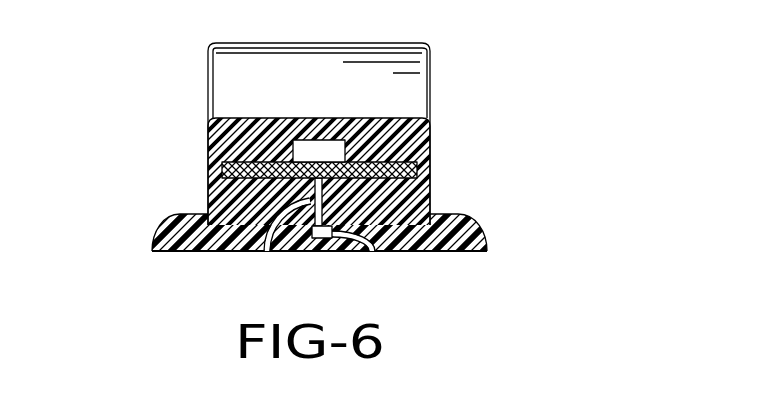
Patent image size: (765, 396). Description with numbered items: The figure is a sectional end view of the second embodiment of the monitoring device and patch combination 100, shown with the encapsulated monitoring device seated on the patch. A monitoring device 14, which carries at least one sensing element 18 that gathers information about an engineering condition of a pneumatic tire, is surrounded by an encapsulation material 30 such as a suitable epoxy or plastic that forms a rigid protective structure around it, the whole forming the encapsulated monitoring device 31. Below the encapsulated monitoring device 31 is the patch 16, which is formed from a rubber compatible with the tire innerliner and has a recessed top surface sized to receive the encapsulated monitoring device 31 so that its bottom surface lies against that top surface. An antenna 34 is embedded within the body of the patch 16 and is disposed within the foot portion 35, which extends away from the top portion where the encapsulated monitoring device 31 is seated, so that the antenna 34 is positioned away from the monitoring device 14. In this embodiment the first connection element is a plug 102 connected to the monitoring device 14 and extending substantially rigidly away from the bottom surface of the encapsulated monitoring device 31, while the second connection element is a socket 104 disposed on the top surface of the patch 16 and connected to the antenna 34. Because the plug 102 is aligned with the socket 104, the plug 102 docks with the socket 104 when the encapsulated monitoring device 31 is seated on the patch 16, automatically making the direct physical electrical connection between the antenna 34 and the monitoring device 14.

The combination 100 is at (341, 153).
The encapsulated monitoring device 31 is at (433, 108).
The encapsulation material 30 is at (213, 152).
The monitoring device 14 is at (417, 167).
The sensing element 18 is at (316, 141).
The foot portion 35 is at (437, 214).
The patch 16 is at (220, 251).
The first connection element 102 is at (288, 207).
The antenna 34 is at (328, 237).
The second connection element 104 is at (356, 240).